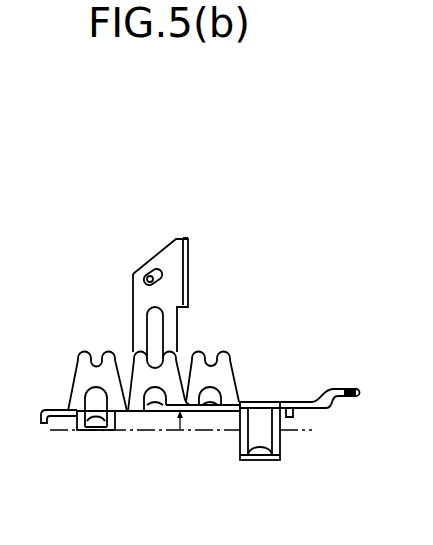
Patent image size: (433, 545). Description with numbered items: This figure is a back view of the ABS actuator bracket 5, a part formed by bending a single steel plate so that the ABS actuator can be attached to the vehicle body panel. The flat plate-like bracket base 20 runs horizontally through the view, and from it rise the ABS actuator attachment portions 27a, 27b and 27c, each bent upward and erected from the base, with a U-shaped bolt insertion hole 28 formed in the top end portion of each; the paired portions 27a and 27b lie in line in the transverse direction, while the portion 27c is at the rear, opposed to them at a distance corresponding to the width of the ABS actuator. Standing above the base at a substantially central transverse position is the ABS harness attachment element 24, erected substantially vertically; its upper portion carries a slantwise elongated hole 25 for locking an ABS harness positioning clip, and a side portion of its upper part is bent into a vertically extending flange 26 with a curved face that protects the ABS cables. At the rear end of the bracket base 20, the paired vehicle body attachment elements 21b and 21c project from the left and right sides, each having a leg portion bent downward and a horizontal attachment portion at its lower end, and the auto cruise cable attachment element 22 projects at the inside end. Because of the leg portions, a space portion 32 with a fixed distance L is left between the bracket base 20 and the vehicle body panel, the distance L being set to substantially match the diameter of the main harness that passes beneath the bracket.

The ABS actuator bracket 5 is at (229, 214).
The ABS harness attachment element 24 is at (172, 250).
The elongated hole 25 is at (152, 272).
The flange 26 is at (189, 263).
The U-shaped bolt insertion hole 28 is at (148, 361).
The ABS actuator attachment portion 27a is at (78, 373).
The ABS actuator attachment portion 27b is at (226, 372).
The ABS actuator attachment portion 27c is at (137, 388).
The bracket base 20 is at (291, 407).
The auto cruise cable attachment element 22 is at (350, 390).
The vehicle body attachment element 21b is at (73, 425).
The vehicle body attachment element 21c is at (277, 444).
The distance L is at (179, 431).
The space portion 32 is at (219, 418).